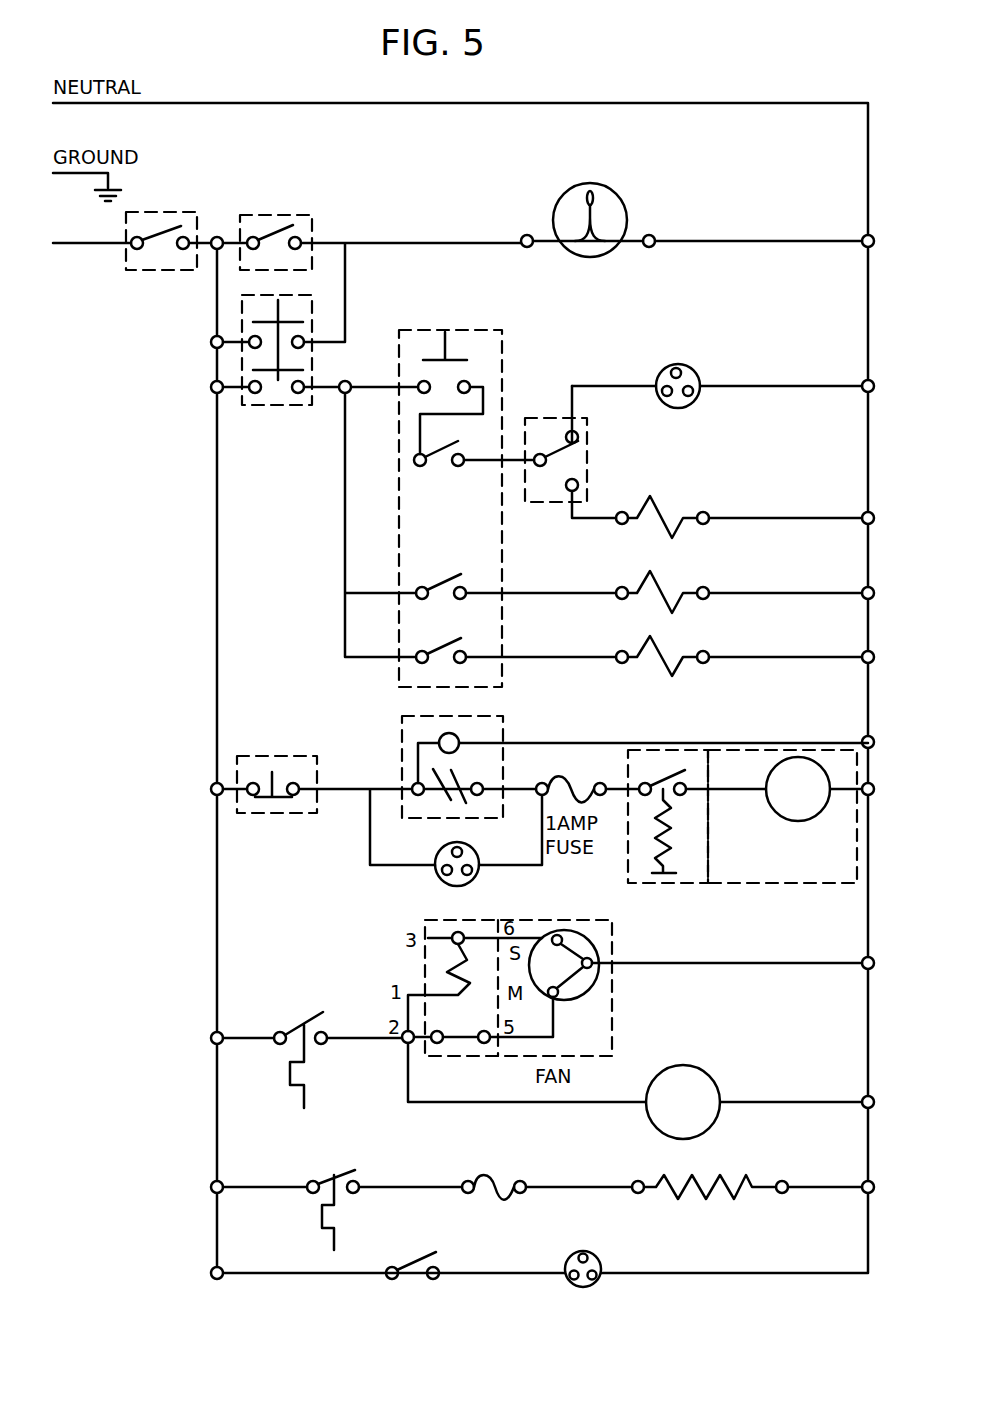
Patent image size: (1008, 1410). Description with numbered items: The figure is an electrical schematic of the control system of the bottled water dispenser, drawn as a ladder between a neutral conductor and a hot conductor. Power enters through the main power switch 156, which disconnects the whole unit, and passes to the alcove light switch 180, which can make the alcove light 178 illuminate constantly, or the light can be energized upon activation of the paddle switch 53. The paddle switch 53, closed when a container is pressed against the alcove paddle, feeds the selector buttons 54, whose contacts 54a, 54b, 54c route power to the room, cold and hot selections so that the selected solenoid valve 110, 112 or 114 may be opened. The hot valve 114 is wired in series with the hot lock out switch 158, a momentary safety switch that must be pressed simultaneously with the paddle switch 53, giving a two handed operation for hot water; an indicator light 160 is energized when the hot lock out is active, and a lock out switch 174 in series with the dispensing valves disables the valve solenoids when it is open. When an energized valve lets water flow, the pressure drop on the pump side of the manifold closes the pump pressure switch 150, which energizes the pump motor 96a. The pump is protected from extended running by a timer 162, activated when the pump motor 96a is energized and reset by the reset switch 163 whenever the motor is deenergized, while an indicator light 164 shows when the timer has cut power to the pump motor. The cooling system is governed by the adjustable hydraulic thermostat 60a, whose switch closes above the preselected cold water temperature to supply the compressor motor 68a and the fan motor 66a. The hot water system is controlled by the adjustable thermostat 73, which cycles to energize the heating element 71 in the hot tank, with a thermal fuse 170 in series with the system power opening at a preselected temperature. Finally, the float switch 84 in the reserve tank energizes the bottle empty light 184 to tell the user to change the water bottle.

The main power switch 156 is at (170, 212).
The alcove light switch 180 is at (298, 217).
The paddle switch 53 is at (246, 306).
The hot lock out switch 158 is at (482, 334).
The selector buttons 54 is at (458, 542).
The selector switch contact 54a is at (444, 600).
The selector switch contact 54b is at (440, 466).
The selector switch contact 54c is at (444, 664).
The alcove light 178 is at (563, 197).
The indicator light 160 is at (697, 375).
The lock out switch 174 is at (546, 497).
The hot valve 114 is at (668, 512).
The solenoid valve 110 is at (670, 585).
The solenoid valve 112 is at (672, 650).
The reset switch 163 is at (305, 762).
The timer 162 is at (487, 726).
The indicator light 164 is at (440, 877).
The pump pressure switch 150 is at (657, 772).
The pump motor 96a is at (824, 758).
The compressor motor 68a is at (598, 944).
The adjustable hydraulic thermostat 60a is at (313, 1050).
The fan motor 66a is at (718, 1078).
The adjustable thermostat 73 is at (356, 1176).
The thermal fuse 170 is at (518, 1180).
The heating element 71 is at (745, 1181).
The float switch 84 is at (428, 1252).
The bottle empty light 184 is at (601, 1258).